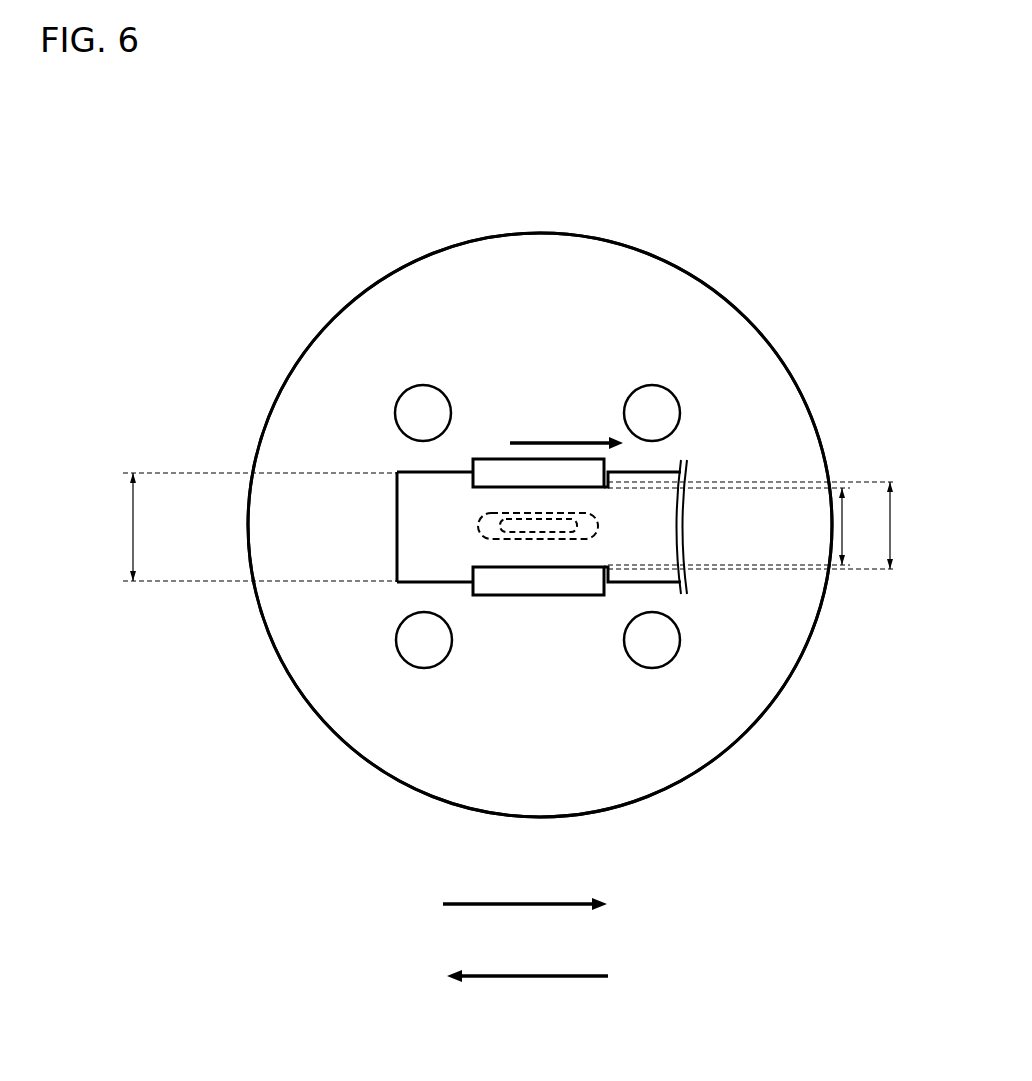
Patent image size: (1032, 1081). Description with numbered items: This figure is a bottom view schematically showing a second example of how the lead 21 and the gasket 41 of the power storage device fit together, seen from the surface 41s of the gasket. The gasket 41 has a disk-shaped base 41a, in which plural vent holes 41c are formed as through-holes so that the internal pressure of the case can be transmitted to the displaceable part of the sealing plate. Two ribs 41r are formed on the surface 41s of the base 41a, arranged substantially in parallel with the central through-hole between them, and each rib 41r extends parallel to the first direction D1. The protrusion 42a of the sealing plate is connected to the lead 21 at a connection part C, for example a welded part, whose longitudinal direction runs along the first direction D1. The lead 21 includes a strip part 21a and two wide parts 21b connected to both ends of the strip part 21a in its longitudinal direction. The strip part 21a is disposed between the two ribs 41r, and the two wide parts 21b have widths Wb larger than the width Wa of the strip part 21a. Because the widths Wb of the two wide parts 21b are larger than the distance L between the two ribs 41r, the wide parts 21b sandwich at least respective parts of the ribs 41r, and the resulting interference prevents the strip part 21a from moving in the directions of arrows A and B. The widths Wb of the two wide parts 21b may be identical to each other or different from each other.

The gasket 41 is at (540, 502).
The base 41a is at (579, 250).
The surface 41s is at (648, 296).
The vent holes 41c is at (407, 392).
The ribs 41r is at (491, 465).
The lead 21 is at (418, 654).
The strip part 21a is at (510, 505).
The wide parts 21b is at (420, 553).
The protrusion 42a is at (567, 540).
The connection part C is at (524, 540).
The first direction D1 is at (542, 440).
The widths of wide parts Wb is at (249, 527).
The width of strip part Wa is at (741, 526).
The distance between ribs L is at (758, 525).
The arrow A is at (525, 916).
The arrow B is at (527, 988).